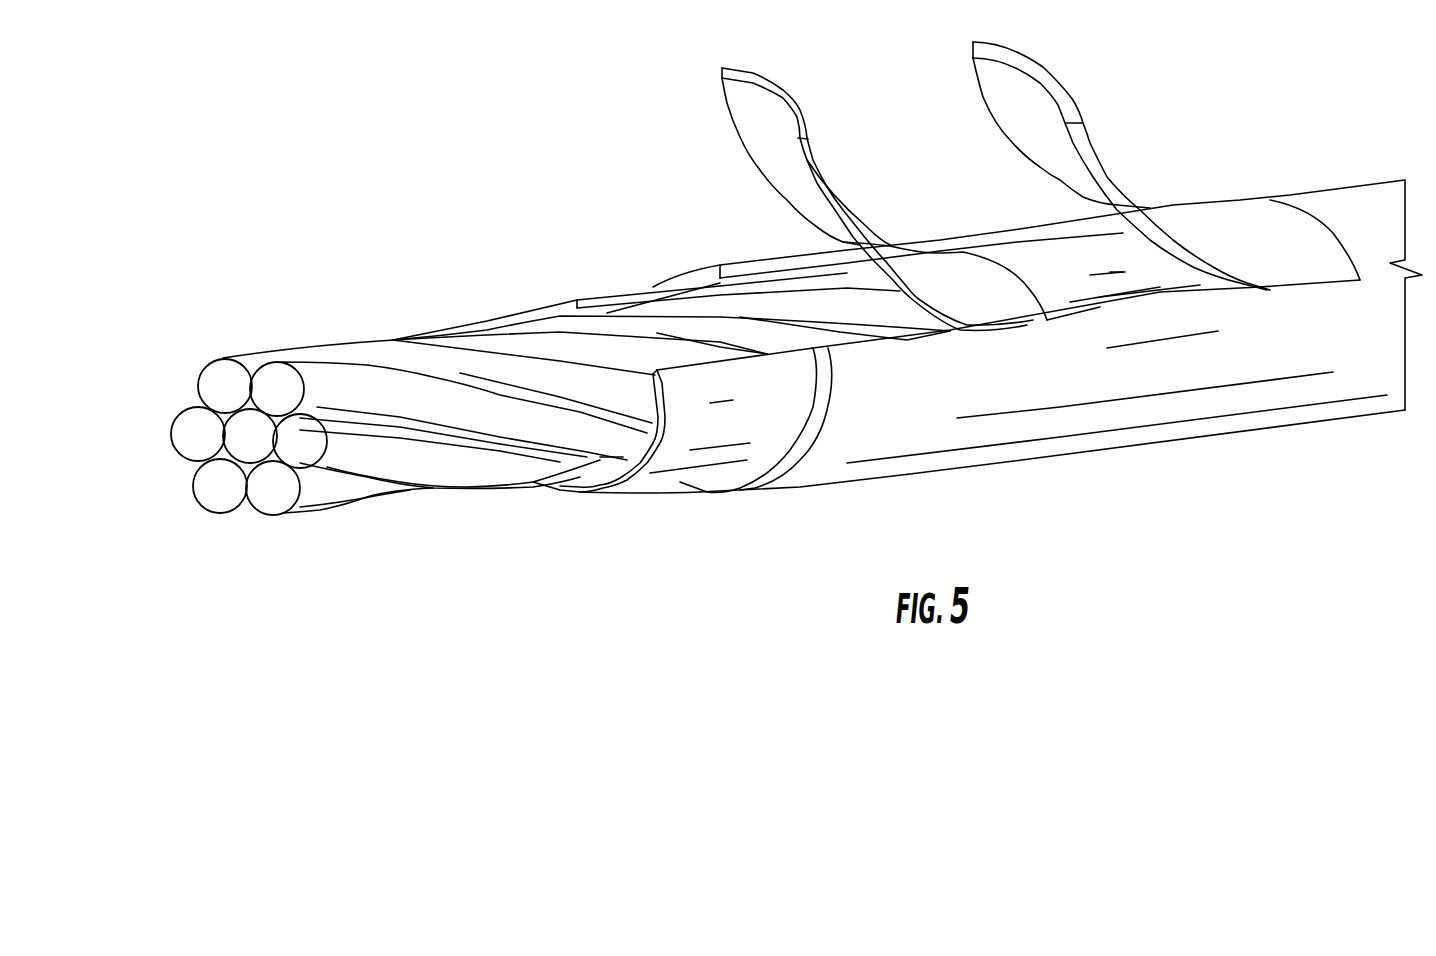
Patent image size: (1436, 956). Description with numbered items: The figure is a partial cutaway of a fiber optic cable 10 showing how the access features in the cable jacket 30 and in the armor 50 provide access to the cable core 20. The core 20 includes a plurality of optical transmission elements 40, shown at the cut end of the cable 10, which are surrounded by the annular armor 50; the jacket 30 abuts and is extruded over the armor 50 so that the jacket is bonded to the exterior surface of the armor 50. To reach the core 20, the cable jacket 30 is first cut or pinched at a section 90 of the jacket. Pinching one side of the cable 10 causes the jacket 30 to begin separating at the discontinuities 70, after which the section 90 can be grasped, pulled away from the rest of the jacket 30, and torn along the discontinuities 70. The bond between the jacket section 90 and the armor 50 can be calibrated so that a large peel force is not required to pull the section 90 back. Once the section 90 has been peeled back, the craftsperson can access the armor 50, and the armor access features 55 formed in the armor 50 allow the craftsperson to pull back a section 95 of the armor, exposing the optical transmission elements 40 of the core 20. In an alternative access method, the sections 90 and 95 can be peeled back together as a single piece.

The fiber optic cable 10 is at (480, 172).
The core 20 is at (303, 308).
The jacket 30 is at (982, 453).
The optical transmission elements 40 is at (298, 452).
The armor 50 is at (645, 478).
The armor access features 55 is at (1070, 283).
The discontinuities 70 is at (1265, 284).
The jacket section 90 is at (1033, 65).
The armor section 95 is at (750, 80).